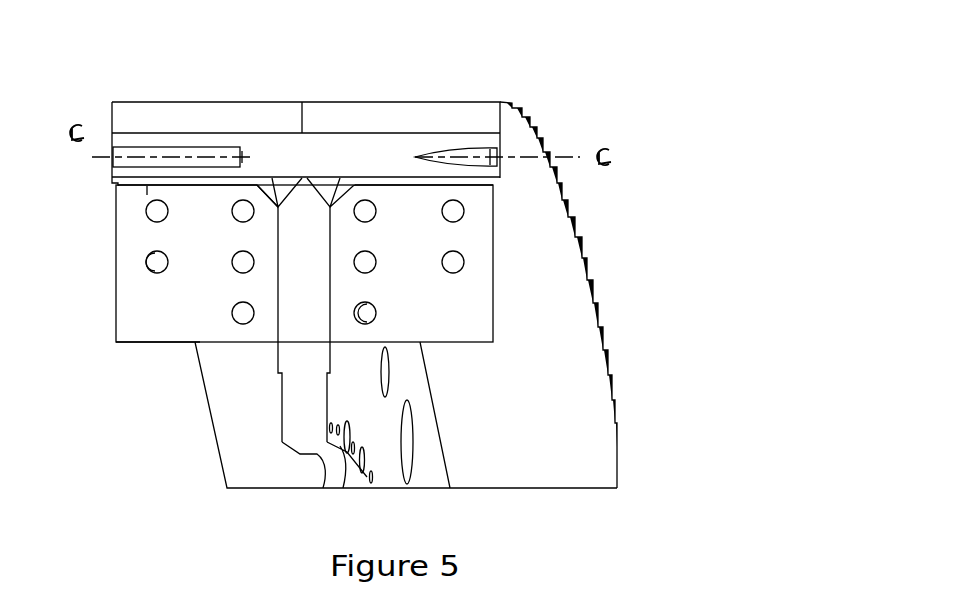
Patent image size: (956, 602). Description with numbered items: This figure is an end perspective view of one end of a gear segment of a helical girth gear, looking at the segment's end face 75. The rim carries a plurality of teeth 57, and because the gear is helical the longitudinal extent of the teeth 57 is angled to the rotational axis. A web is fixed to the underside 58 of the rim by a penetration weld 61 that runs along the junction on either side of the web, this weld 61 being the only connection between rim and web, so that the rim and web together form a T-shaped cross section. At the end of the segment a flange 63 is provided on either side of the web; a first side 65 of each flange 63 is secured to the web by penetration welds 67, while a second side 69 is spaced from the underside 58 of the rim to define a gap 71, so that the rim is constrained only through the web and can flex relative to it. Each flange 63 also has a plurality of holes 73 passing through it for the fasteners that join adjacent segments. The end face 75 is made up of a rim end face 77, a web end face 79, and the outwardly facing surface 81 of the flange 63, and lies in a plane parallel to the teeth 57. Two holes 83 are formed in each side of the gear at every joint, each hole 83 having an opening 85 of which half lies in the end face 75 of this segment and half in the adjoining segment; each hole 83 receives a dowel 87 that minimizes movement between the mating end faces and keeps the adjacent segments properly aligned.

The teeth 57 is at (252, 120).
The underside of the rim 58 is at (392, 181).
The penetration weld 61 is at (283, 190).
The flange 63 is at (130, 228).
The first side of the flange 65 is at (278, 287).
The penetration welds 67 is at (270, 345).
The second side of the flange 69 is at (147, 186).
The gap 71 is at (125, 182).
The holes 73 is at (146, 262).
The end face 75 is at (280, 155).
The rim end face 77 is at (345, 157).
The web end face 79 is at (308, 416).
The outwardly facing surface of the flange 81 is at (165, 327).
The hole 83 is at (207, 148).
The opening 85 is at (128, 156).
The dowel 87 is at (176, 157).